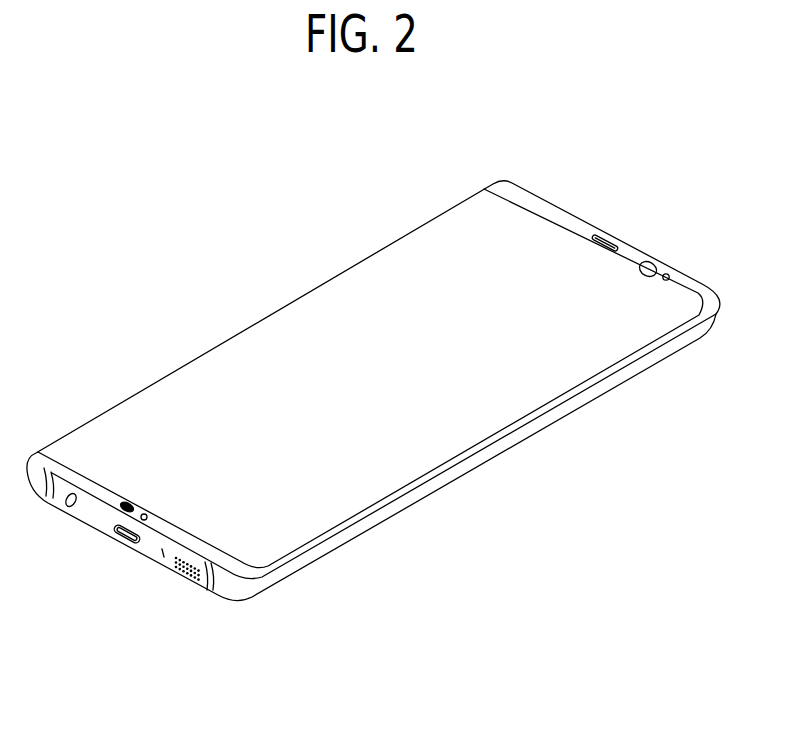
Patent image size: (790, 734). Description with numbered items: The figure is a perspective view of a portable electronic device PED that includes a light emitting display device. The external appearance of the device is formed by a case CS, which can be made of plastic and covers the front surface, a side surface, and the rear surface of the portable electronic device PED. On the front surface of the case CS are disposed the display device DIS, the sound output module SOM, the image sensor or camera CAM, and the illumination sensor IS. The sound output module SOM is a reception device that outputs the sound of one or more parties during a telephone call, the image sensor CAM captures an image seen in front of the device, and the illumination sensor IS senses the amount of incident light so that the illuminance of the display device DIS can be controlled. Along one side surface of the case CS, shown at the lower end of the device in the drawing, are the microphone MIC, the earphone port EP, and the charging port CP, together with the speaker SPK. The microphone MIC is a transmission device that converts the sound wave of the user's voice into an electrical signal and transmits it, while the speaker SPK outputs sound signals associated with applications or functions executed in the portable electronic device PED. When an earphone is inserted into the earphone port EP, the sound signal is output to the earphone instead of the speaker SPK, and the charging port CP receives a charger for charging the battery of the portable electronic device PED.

The portable electronic device PED is at (263, 229).
The display device DIS is at (383, 280).
The case CS is at (542, 207).
The sound output module SOM is at (599, 235).
The image sensor CAM is at (650, 262).
The illumination sensor IS is at (669, 277).
The earphone port EP is at (72, 512).
The charging port CP is at (120, 545).
The microphone MIC is at (162, 559).
The speaker SPK is at (195, 585).